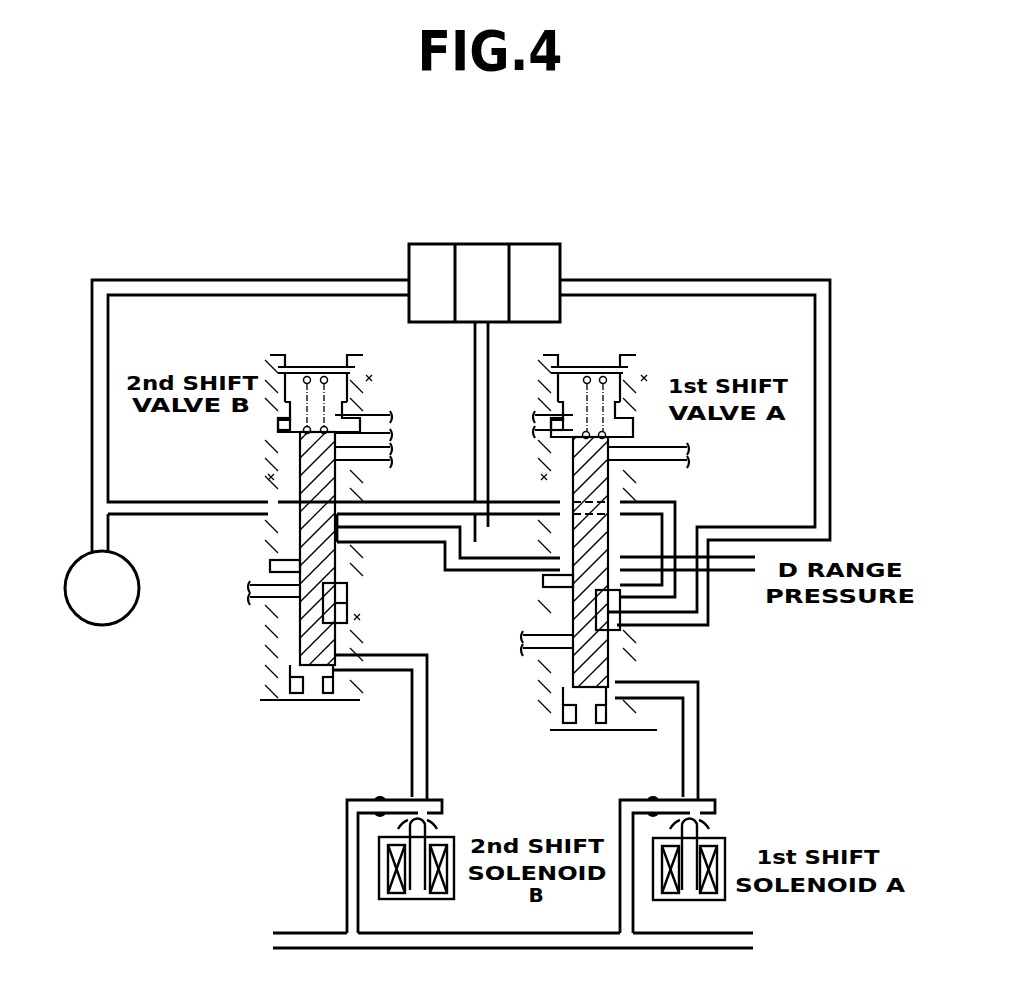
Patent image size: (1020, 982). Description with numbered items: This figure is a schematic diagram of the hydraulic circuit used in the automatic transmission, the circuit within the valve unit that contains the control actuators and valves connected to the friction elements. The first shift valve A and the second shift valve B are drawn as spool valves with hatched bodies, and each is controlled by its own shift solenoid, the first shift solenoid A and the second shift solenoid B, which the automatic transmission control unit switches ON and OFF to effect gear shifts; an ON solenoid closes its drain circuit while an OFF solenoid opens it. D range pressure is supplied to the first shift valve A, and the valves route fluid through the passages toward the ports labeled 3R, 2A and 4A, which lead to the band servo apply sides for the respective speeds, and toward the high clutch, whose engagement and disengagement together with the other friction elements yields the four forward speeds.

The 3rd gear reverse shift range indicator 3R is at (431, 283).
The 2nd gear shift range indicator 2A is at (484, 283).
The 4th gear shift range indicator 4A is at (536, 283).